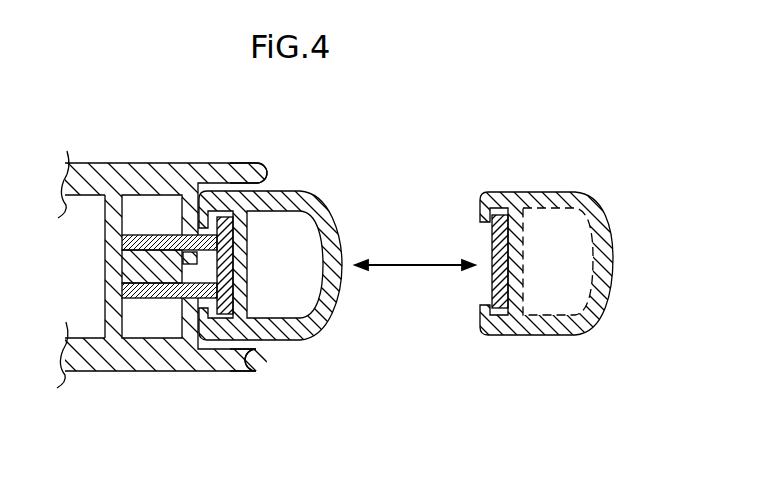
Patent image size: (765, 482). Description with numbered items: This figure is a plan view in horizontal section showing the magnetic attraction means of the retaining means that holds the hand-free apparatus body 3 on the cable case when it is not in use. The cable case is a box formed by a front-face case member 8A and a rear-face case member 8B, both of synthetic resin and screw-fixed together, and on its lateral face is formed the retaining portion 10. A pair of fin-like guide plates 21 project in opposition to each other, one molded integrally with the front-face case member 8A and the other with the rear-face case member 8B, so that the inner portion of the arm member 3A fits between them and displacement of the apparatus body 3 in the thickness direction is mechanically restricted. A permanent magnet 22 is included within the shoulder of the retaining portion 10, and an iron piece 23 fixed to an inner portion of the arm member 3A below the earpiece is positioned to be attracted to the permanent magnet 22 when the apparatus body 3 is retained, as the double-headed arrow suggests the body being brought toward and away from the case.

The apparatus body 3 is at (615, 248).
The arm member 3A is at (340, 232).
The front-face case member 8A is at (122, 162).
The rear-face case member 8B is at (117, 372).
The retaining portion 10 is at (240, 275).
The guide plate 21 is at (226, 163).
The permanent magnet 22 is at (122, 268).
The iron piece 23 is at (231, 258).